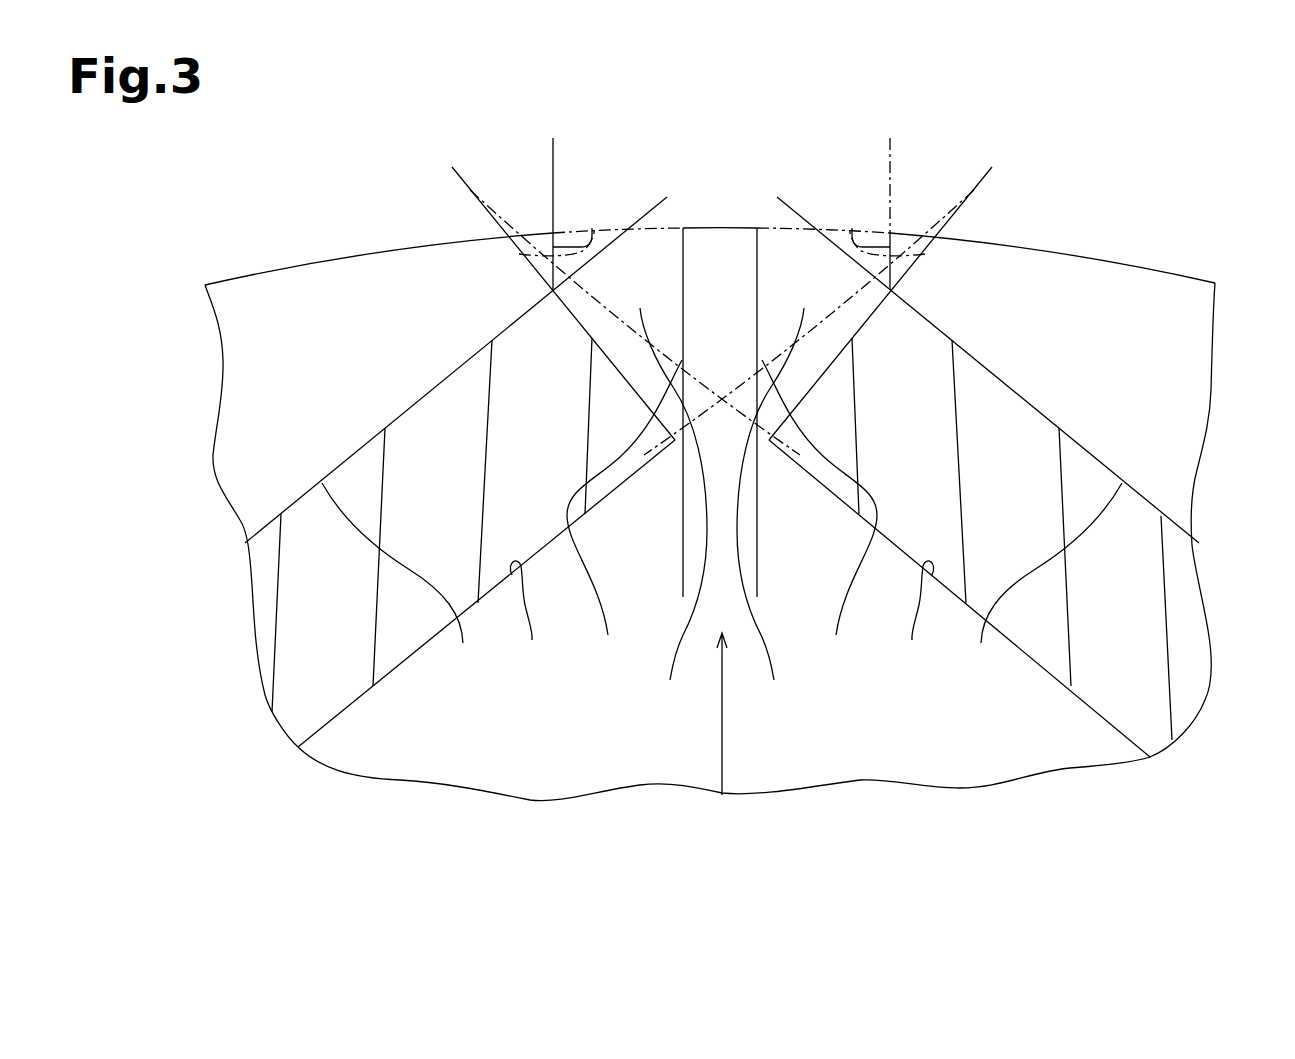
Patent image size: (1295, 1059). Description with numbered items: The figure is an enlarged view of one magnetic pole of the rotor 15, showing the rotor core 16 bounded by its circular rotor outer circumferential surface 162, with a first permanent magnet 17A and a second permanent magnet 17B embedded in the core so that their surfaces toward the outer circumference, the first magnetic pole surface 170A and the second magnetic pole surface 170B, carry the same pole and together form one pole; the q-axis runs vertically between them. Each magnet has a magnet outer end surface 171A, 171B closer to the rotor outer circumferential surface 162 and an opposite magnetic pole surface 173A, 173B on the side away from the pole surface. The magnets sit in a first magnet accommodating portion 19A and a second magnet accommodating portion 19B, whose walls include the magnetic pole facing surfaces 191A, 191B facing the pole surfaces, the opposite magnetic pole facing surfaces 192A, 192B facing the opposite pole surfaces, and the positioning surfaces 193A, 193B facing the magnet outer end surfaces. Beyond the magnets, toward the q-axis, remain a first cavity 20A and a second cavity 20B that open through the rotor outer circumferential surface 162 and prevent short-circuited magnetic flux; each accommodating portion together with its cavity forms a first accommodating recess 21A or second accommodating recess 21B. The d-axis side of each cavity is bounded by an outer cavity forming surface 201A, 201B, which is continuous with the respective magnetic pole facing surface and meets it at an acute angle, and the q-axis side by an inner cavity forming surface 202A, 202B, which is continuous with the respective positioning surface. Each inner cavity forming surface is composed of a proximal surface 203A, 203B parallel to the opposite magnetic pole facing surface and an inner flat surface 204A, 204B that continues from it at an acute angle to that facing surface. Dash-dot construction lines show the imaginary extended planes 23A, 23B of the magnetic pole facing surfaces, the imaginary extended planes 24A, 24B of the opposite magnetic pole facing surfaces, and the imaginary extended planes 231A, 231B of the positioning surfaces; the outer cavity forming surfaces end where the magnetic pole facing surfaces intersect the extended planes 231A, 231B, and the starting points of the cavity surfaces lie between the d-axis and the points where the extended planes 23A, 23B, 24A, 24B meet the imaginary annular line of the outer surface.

The rotor 15 is at (1146, 164).
The rotor core 16 is at (1157, 280).
The rotor outer circumferential surface 162 is at (1081, 253).
The first permanent magnet 17A is at (1197, 610).
The second permanent magnet 17B is at (290, 641).
The first magnetic pole surface 170A is at (1081, 446).
The second magnetic pole surface 170B is at (363, 446).
The first magnet outer end surface 171A is at (869, 318).
The second magnet outer end surface 171B is at (575, 318).
The first opposite magnetic pole surface 173A is at (1121, 728).
The second opposite magnetic pole surface 173B is at (323, 728).
The first magnet accommodating portion 19A is at (942, 525).
The second magnet accommodating portion 19B is at (502, 525).
The first magnetic pole facing surface 191A is at (1031, 580).
The second magnetic pole facing surface 191B is at (412, 580).
The first opposite magnetic pole facing surface 192A is at (919, 508).
The second opposite magnetic pole facing surface 192B is at (526, 508).
The first positioning surface 193A is at (819, 507).
The second positioning surface 193B is at (624, 507).
The first cavity 20A is at (770, 510).
The second cavity 20B is at (673, 510).
The first accommodating recess 21A is at (929, 530).
The second accommodating recess 21B is at (514, 530).
The first outer cavity forming surface 201A is at (852, 228).
The second outer cavity forming surface 201B is at (592, 228).
The first inner cavity forming surface 202A is at (790, 396).
The second inner cavity forming surface 202B is at (657, 397).
The first proximal surface 203A is at (817, 295).
The second proximal surface 203B is at (683, 272).
The first inner flat surface 204A is at (760, 243).
The second inner flat surface 204B is at (684, 243).
The imaginary extended plane of the first magnetic pole facing surface 23A is at (780, 203).
The imaginary extended plane of the second magnetic pole facing surface 23B is at (656, 195).
The imaginary extended plane of the first opposite magnetic pole facing surface 24A is at (540, 232).
The imaginary extended plane of the second opposite magnetic pole facing surface 24B is at (904, 232).
The imaginary extended plane of the first positioning surface 231A is at (974, 190).
The imaginary extended plane of the second positioning surface 231B is at (470, 190).